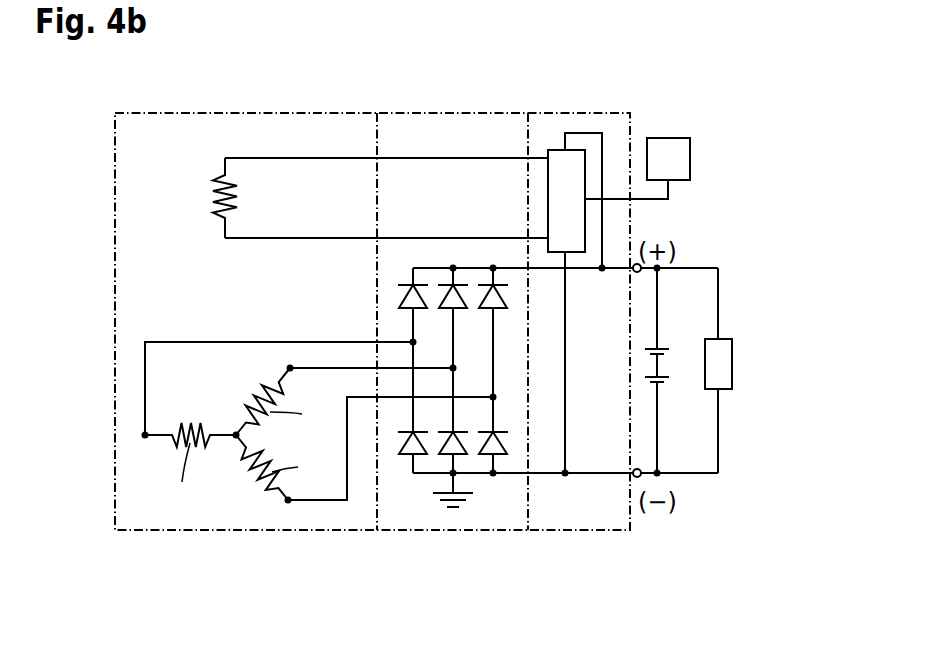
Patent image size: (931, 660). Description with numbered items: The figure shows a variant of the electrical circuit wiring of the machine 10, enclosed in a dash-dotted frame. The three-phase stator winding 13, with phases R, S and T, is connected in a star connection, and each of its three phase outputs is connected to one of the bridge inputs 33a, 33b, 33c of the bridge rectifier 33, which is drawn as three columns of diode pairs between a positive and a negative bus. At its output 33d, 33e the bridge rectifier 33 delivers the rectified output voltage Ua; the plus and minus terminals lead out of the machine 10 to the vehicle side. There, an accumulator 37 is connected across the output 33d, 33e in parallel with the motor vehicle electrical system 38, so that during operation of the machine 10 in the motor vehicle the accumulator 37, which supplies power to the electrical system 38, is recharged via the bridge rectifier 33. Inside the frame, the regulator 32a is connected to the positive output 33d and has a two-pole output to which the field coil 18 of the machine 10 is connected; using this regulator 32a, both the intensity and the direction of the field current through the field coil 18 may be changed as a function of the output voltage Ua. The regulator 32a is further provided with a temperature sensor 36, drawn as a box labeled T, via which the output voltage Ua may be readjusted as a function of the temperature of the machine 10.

The machine 10 is at (128, 297).
The stator winding 13 is at (190, 380).
The field coil 18 is at (213, 190).
The regulator 32a is at (558, 160).
The bridge rectifier 33 is at (473, 364).
The bridge input 33a is at (413, 326).
The bridge input 33b is at (457, 343).
The bridge input 33c is at (497, 366).
The bridge rectifier output 33d is at (606, 272).
The bridge rectifier output 33e is at (610, 477).
The temperature sensor 36 is at (683, 162).
The accumulator 37 is at (668, 372).
The motor vehicle electrical system 38 is at (720, 364).